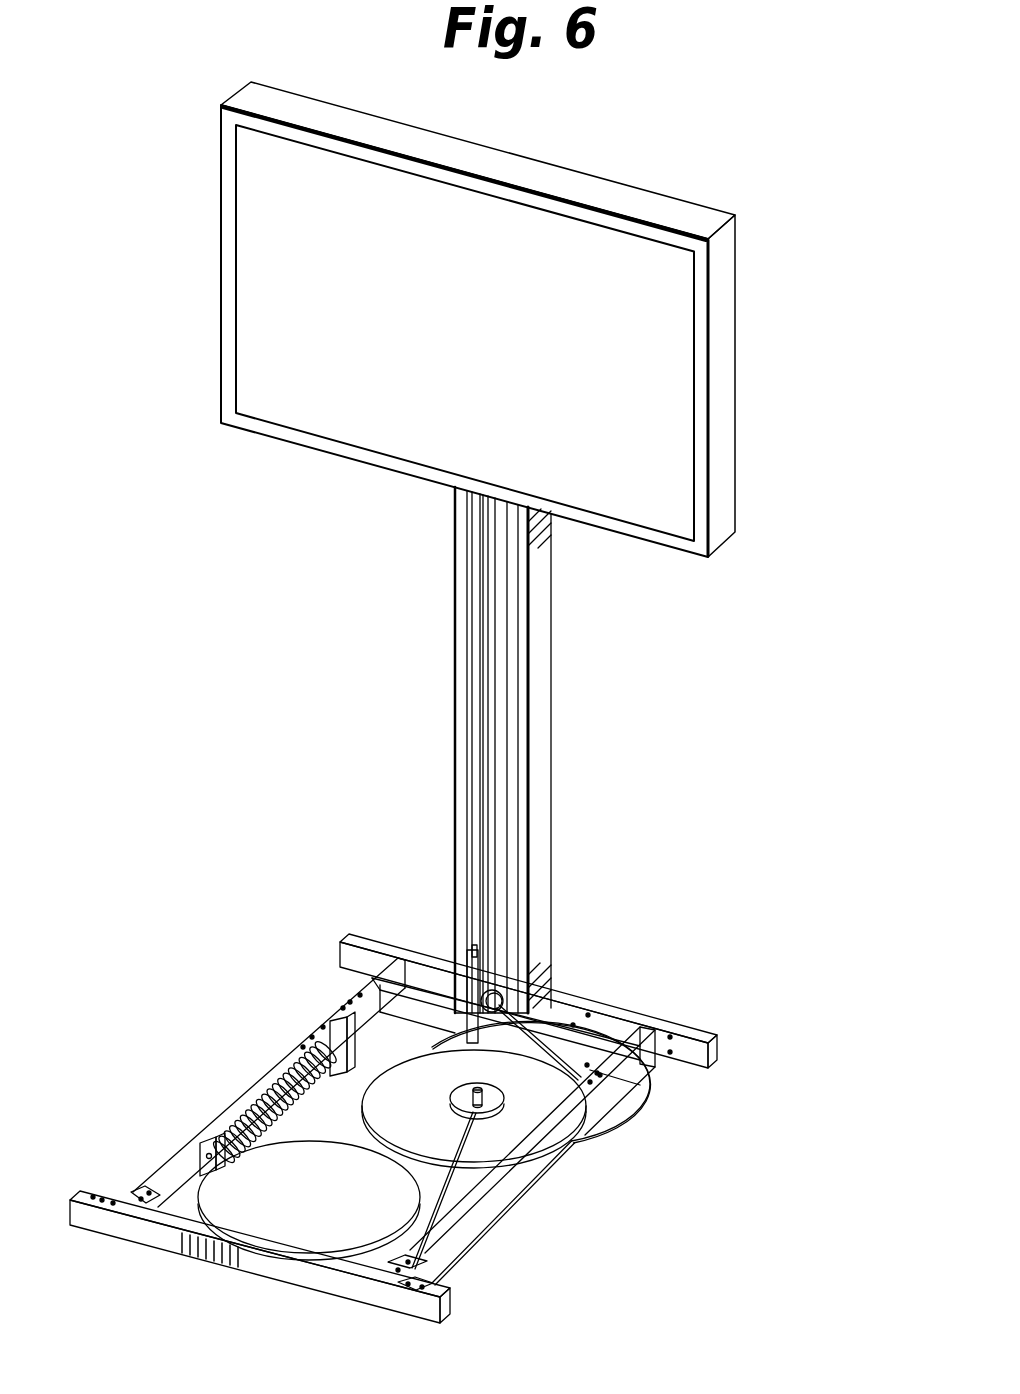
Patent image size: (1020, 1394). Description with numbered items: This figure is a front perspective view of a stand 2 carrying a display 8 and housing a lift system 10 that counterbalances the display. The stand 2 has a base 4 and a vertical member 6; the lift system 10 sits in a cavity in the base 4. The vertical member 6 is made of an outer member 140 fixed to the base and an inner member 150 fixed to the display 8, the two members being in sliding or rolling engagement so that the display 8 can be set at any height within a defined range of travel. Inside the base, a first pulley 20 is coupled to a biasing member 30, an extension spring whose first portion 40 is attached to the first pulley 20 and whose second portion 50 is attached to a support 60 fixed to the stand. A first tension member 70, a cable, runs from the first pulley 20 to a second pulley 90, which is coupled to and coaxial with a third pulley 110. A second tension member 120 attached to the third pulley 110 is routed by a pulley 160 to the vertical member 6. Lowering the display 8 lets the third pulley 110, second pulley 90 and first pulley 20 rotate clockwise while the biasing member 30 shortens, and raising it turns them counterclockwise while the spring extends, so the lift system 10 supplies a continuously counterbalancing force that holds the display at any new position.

The stand 2 is at (601, 825).
The base 4 is at (703, 1030).
The vertical member 6 is at (542, 688).
The display 8 is at (727, 333).
The lift system 10 is at (597, 953).
The first pulley 20 is at (343, 1228).
The biasing member 30 is at (280, 1077).
The first portion 40 is at (213, 1140).
The second portion 50 is at (318, 1030).
The support 60 is at (337, 1005).
The first tension member 70 is at (468, 1138).
The second pulley 90 is at (575, 1112).
The third pulley 110 is at (547, 1086).
The second tension member 120 is at (535, 1050).
The outer member 140 is at (545, 579).
The inner member 150 is at (488, 519).
The pulley 160 is at (460, 1000).